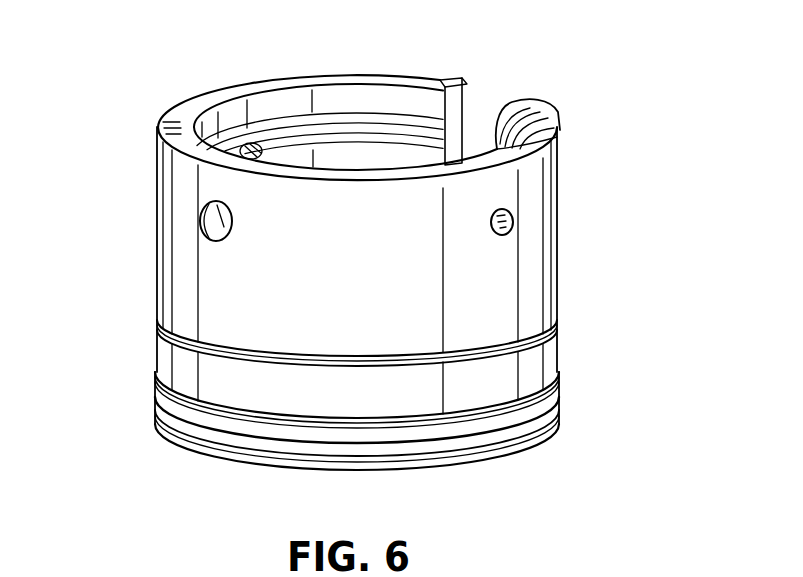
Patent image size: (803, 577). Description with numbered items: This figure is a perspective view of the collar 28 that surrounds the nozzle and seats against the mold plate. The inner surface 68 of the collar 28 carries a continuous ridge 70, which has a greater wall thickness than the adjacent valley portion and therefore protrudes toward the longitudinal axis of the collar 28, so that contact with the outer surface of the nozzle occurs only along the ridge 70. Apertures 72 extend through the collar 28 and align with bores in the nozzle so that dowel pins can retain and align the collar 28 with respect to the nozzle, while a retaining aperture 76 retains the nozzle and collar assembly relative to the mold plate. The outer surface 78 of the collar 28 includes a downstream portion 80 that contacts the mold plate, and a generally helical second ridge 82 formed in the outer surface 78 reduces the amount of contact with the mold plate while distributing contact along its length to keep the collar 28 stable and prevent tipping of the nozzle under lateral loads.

The collar 28 is at (167, 181).
The inner surface 68 is at (378, 103).
The continuous ridge 70 is at (459, 160).
The apertures 72 is at (513, 227).
The retaining aperture 76 is at (218, 220).
The outer surface 78 is at (557, 276).
The downstream portion 80 is at (150, 407).
The second ridge 82 is at (557, 394).